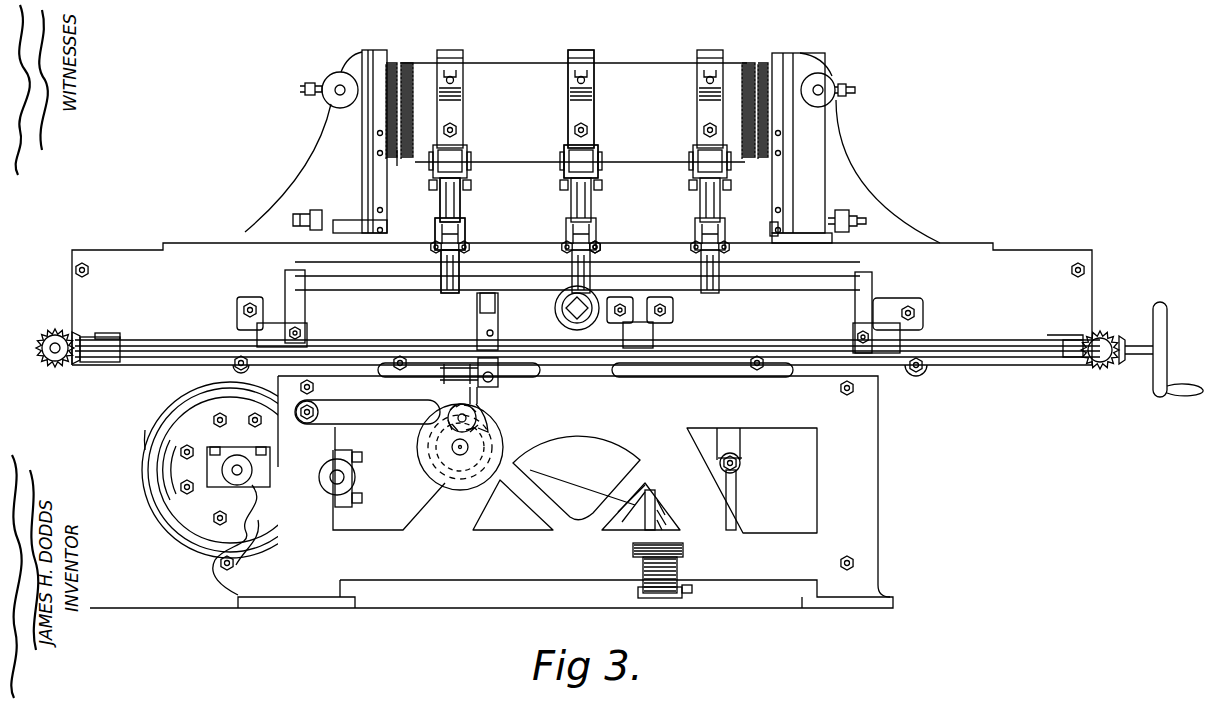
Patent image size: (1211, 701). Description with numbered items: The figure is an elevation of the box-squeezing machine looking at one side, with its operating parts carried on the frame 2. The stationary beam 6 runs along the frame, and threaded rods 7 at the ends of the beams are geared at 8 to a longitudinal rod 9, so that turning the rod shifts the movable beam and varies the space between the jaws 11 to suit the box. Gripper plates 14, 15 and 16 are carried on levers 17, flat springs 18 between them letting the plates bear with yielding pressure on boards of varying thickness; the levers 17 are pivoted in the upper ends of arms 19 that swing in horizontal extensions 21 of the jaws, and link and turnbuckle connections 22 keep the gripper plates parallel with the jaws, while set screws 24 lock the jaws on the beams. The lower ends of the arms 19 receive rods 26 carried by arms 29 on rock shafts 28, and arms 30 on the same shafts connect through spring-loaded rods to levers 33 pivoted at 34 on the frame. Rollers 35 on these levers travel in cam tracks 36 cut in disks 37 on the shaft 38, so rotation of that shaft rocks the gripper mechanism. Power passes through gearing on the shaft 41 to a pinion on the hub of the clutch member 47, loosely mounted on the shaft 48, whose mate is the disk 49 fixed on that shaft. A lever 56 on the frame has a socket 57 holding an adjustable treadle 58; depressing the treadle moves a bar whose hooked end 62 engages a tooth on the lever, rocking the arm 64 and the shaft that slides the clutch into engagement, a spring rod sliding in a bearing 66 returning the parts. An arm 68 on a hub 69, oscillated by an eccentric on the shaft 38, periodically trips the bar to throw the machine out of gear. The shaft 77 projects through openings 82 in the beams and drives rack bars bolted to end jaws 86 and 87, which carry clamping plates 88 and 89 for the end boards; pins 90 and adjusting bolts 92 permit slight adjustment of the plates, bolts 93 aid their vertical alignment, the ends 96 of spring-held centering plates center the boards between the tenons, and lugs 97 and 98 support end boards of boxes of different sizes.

The frame 2 is at (878, 450).
The beam 6 is at (100, 248).
The threaded rods 7 is at (48, 357).
The gearing 8 is at (74, 365).
The longitudinal rod 9 is at (996, 366).
The jaw 11 is at (1164, 322).
The gripper plate 14 is at (452, 60).
The gripper plate 15 is at (582, 60).
The gripper plate 16 is at (711, 60).
The levers 17 is at (590, 150).
The flat springs 18 is at (590, 106).
The arms 19 is at (444, 275).
The horizontal extensions 21 is at (468, 230).
The link and turnbuckle connections 22 is at (463, 194).
The set screws 24 is at (598, 258).
The rods 26 is at (745, 282).
The rock shafts 28 is at (790, 338).
The arms 29 is at (868, 297).
The arms 30 is at (478, 308).
The levers 33 is at (383, 423).
The pivot 34 is at (307, 422).
The anti-friction rollers 35 is at (490, 417).
The cam tracks 36 is at (484, 428).
The disks 37 is at (458, 490).
The shaft 38 is at (453, 452).
The shaft 41 is at (335, 482).
The clutch member 47 is at (172, 478).
The shaft 48 is at (243, 472).
The clutch disk 49 is at (185, 503).
The lever 56 is at (648, 492).
The socket 57 is at (668, 594).
The treadle 58 is at (686, 552).
The hooked end 62 is at (660, 511).
The arm 64 is at (738, 490).
The bearing 66 is at (738, 455).
The arm 68 is at (580, 496).
The hub 69 is at (500, 497).
The shaft 77 is at (565, 360).
The openings 82 is at (556, 308).
The end jaw 86 is at (845, 166).
The end jaw 87 is at (306, 166).
The clamping plate 88 is at (795, 53).
The clamping plate 89 is at (362, 52).
The pins 90 is at (338, 92).
The adjusting bolts 92 is at (304, 88).
The bolts 93 is at (868, 222).
The ends 96 is at (392, 224).
The lug 97 is at (398, 166).
The lug 98 is at (770, 232).